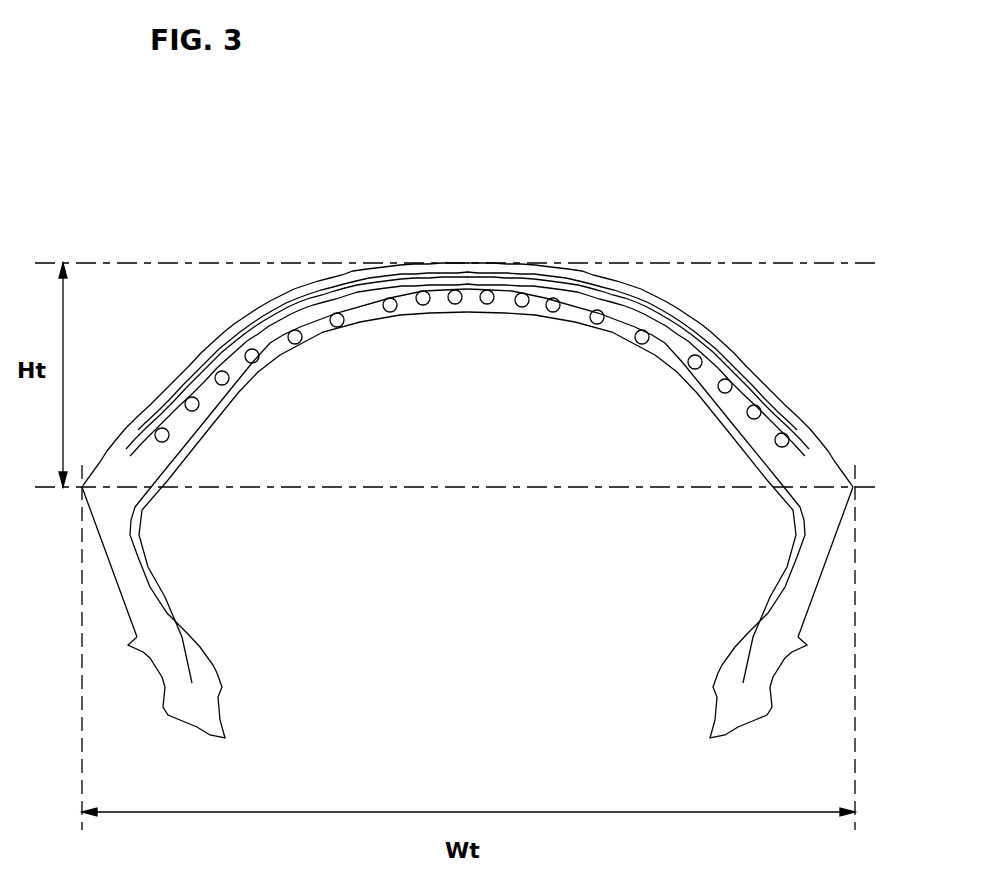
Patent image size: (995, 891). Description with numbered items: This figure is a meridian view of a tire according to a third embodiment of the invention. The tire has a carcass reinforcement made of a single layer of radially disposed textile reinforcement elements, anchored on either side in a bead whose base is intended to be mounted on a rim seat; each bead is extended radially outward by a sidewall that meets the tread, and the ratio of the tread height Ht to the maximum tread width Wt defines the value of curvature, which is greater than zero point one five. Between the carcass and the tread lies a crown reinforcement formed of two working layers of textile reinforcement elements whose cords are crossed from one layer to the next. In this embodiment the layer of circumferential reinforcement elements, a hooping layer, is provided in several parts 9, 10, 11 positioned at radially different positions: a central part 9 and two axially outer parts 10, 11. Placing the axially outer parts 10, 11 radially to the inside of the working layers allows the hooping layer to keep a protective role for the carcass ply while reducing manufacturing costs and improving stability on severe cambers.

The part of the layer of circumferential reinforcement elements 9 is at (342, 322).
The axially outer part 10 is at (191, 400).
The axially outer part 11 is at (757, 407).